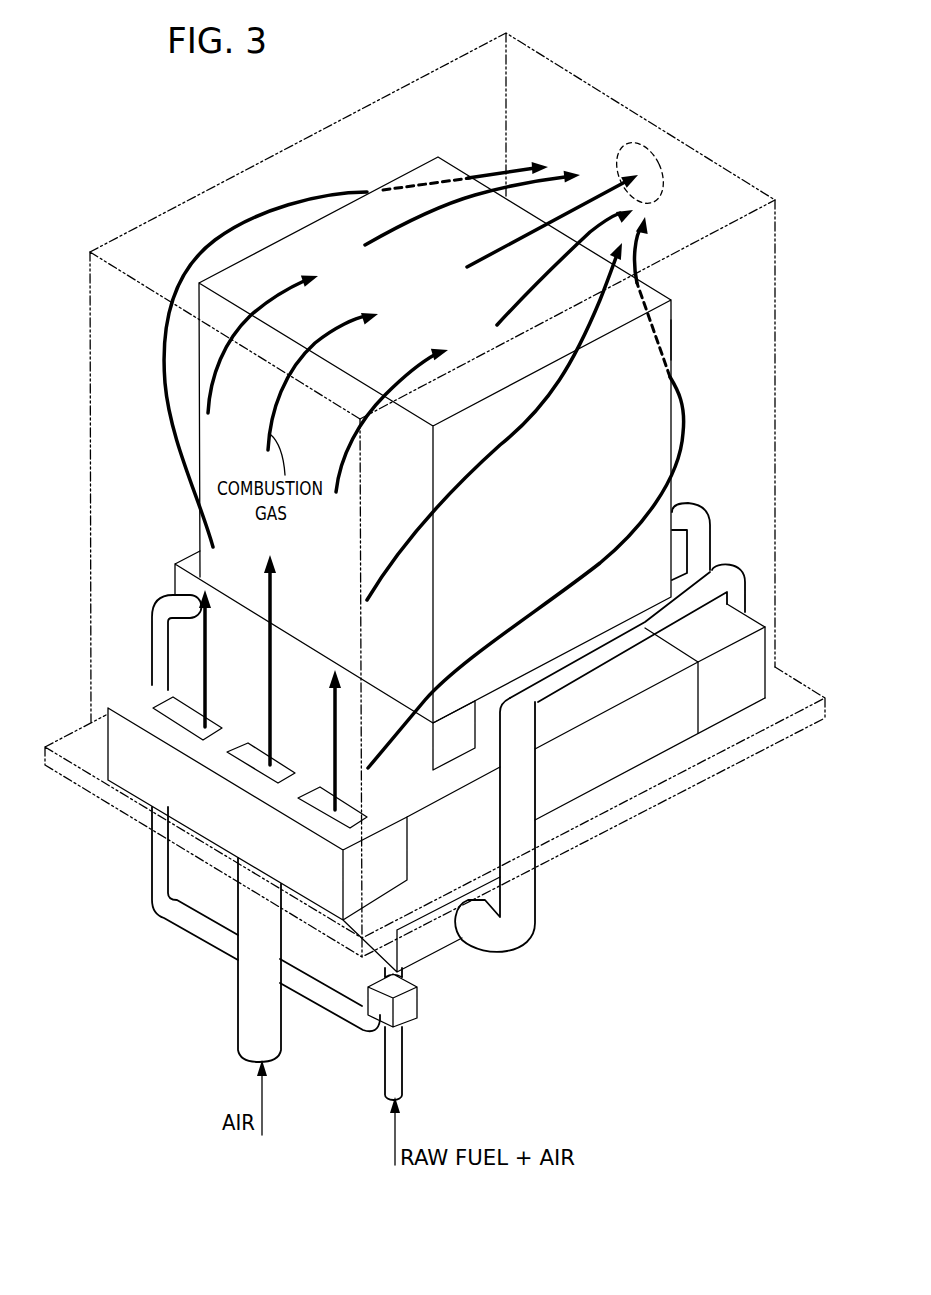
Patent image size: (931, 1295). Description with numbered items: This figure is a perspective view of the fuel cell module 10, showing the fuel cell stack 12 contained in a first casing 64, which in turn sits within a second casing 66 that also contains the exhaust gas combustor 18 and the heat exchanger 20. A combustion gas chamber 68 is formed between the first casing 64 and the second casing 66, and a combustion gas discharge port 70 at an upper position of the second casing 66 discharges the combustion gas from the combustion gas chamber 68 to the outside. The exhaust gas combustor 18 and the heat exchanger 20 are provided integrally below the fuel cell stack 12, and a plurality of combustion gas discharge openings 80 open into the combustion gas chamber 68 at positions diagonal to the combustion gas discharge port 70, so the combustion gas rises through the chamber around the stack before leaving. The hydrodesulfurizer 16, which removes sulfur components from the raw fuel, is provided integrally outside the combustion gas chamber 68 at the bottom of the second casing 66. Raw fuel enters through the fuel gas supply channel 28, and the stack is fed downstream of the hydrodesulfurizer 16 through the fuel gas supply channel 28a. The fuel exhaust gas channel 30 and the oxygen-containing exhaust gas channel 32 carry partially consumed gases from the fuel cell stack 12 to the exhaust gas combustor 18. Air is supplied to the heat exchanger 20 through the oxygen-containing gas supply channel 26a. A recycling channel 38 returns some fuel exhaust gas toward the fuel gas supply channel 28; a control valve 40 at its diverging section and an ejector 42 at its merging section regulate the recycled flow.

The fuel cell module 10 is at (145, 124).
The fuel cell stack 12 is at (676, 298).
The hydrodesulfurizer 16 is at (464, 944).
The exhaust gas combustor 18 is at (737, 718).
The heat exchanger 20 is at (648, 758).
The oxygen-containing gas supply channel 26a is at (238, 1012).
The fuel gas supply channel 28 is at (405, 977).
The fuel gas supply channel 28a is at (537, 915).
The fuel exhaust gas channel 30 is at (595, 647).
The oxygen-containing exhaust gas channel 32 is at (702, 540).
The recycling channel 38 is at (332, 1005).
The control valve 40 is at (408, 742).
The ejector 42 is at (418, 1010).
The first casing 64 is at (673, 336).
The second casing 66 is at (594, 86).
The combustion gas chamber 68 is at (122, 468).
The combustion gas discharge port 70 is at (643, 158).
The combustion gas discharge openings 80 is at (183, 718).